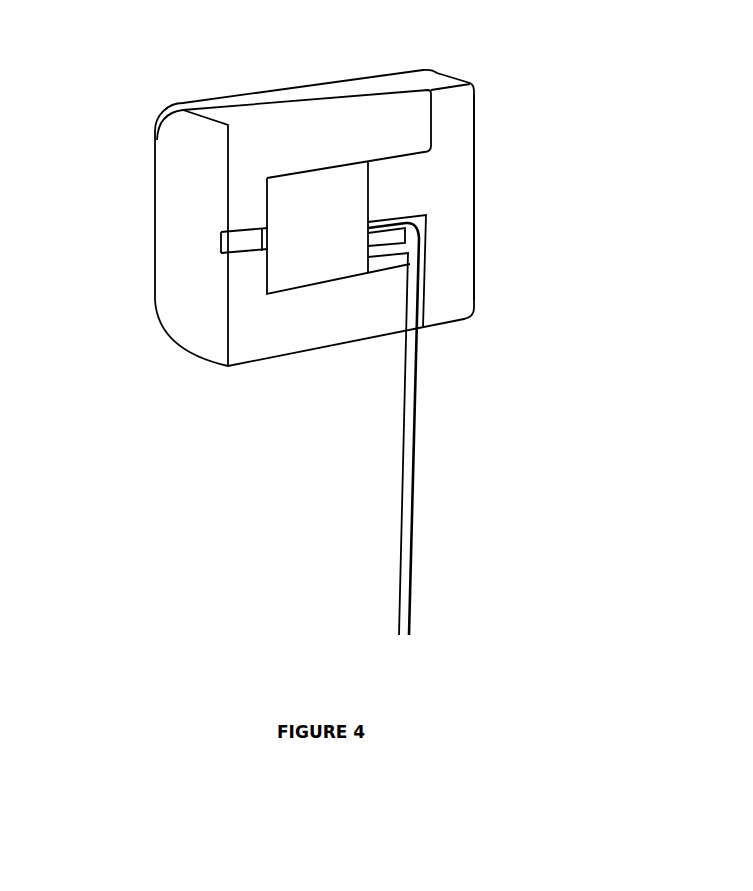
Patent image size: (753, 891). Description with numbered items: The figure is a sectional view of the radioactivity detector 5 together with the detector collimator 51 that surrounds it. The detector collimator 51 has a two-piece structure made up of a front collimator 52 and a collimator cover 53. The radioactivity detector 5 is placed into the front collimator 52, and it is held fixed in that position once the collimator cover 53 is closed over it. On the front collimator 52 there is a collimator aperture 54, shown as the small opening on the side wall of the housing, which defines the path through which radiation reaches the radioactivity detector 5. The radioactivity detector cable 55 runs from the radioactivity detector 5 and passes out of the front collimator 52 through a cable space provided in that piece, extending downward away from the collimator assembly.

The detector collimator 51 is at (144, 53).
The front collimator 52 is at (190, 338).
The collimator cover 53 is at (484, 190).
The collimator aperture 54 is at (226, 238).
The radioactivity detector 5 is at (296, 244).
The radioactivity detector cable 55 is at (420, 528).